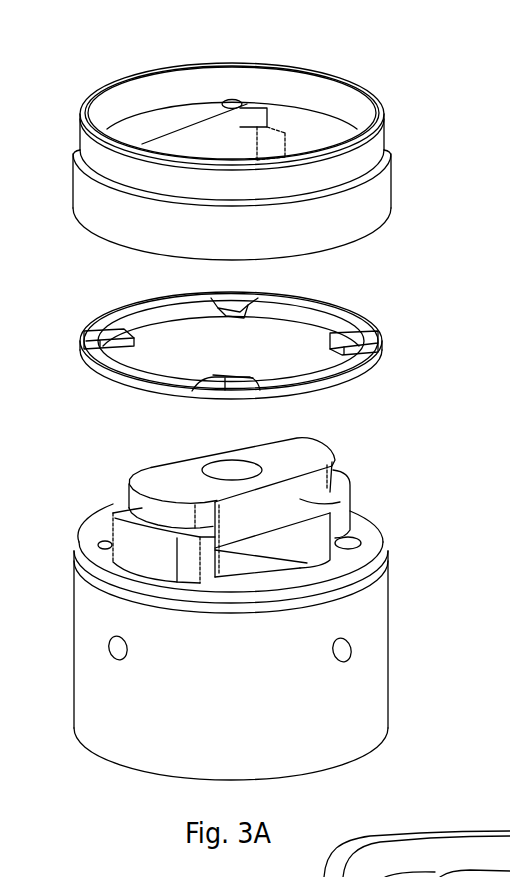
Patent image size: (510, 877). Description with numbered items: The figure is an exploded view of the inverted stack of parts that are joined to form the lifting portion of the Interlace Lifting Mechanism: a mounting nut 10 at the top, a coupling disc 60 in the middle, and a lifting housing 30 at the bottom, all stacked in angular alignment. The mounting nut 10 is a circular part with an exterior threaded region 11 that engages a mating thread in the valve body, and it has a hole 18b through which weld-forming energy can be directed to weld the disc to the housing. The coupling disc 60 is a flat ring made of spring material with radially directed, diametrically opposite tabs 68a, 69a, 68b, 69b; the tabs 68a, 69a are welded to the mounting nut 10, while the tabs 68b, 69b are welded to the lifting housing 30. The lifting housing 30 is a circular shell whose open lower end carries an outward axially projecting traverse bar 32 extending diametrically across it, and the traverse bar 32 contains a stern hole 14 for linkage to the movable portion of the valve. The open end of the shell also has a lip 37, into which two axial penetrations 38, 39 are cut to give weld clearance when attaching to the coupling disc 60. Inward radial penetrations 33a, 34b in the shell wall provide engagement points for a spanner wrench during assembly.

The mounting nut 10 is at (210, 140).
The threaded region 11 is at (95, 207).
The hole 18b is at (228, 103).
The coupling disc 60 is at (225, 353).
The coupling disc tab 68a is at (345, 338).
The coupling disc tab 68b is at (233, 300).
The coupling disc tab 69a is at (122, 338).
The coupling disc tab 69b is at (196, 388).
The stern hole 14 is at (240, 470).
The traverse bar 32 is at (261, 499).
The lifting housing 30 is at (232, 608).
The inward radial penetration 33a is at (347, 653).
The inward radial penetration 34b is at (115, 648).
The lip 37 is at (327, 572).
The axial penetration 38 is at (357, 540).
The axial penetration 39 is at (110, 538).